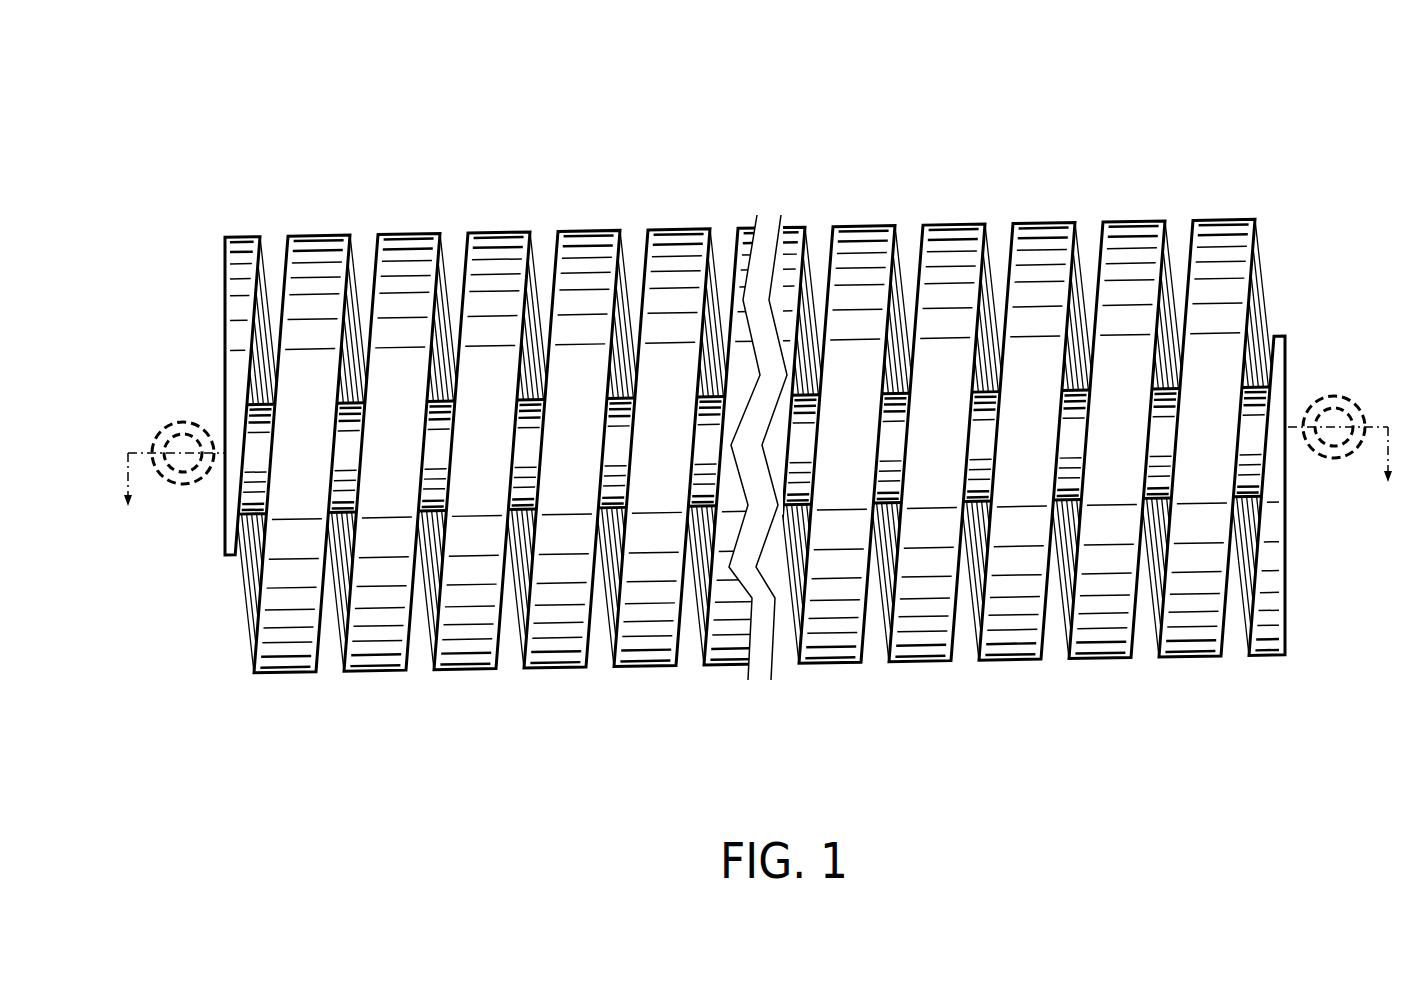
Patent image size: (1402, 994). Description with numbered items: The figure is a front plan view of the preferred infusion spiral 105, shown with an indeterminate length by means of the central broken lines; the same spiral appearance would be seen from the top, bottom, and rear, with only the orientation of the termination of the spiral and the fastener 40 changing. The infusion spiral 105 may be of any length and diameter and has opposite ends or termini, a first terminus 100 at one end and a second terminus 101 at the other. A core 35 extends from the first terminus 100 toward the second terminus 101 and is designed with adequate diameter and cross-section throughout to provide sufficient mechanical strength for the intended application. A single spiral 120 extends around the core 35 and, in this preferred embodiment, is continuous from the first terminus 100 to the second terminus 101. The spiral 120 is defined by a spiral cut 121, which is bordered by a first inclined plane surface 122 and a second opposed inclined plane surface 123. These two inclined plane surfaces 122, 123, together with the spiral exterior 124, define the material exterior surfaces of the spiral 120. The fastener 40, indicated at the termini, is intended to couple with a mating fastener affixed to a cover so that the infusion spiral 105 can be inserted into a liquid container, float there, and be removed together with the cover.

The infusion spiral 105 is at (222, 90).
The first terminus 100 is at (225, 336).
The core 35 is at (237, 575).
The spiral 120 is at (409, 226).
The first inclined plane surface 122 is at (612, 645).
The spiral exterior 124 is at (692, 232).
The second opposed inclined plane surface 123 is at (992, 236).
The spiral cut 121 is at (1093, 232).
The second terminus 101 is at (1292, 548).
The fastener 40 is at (183, 422).